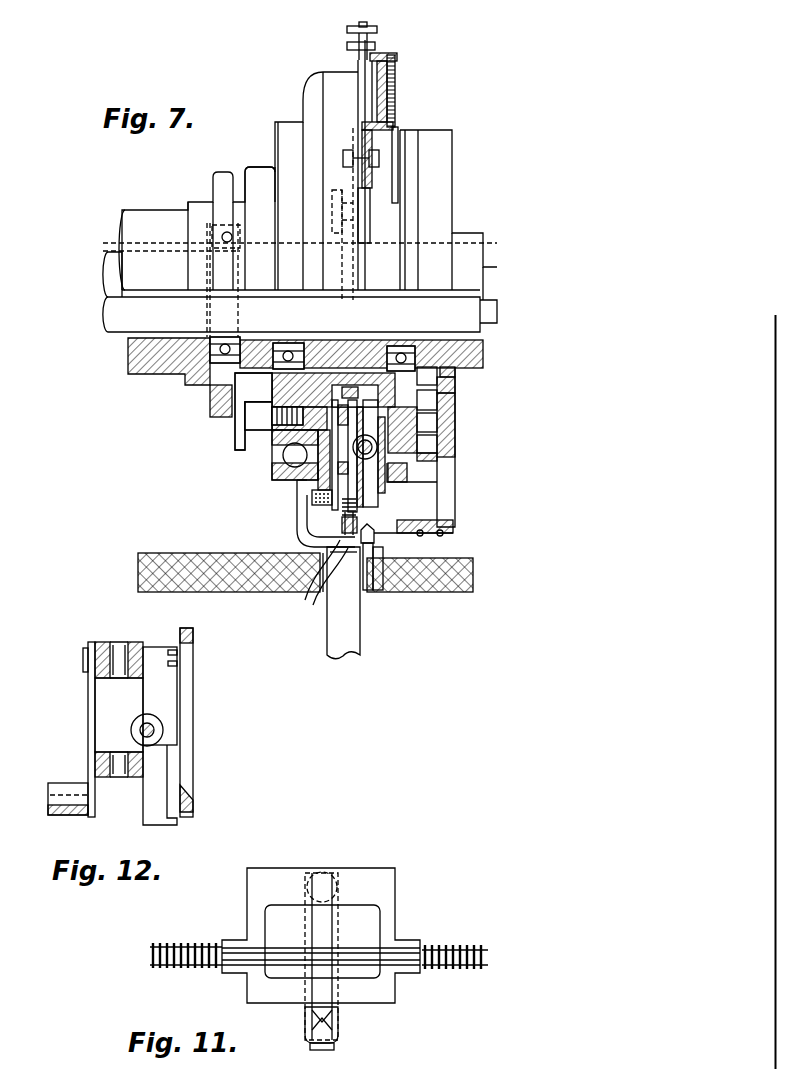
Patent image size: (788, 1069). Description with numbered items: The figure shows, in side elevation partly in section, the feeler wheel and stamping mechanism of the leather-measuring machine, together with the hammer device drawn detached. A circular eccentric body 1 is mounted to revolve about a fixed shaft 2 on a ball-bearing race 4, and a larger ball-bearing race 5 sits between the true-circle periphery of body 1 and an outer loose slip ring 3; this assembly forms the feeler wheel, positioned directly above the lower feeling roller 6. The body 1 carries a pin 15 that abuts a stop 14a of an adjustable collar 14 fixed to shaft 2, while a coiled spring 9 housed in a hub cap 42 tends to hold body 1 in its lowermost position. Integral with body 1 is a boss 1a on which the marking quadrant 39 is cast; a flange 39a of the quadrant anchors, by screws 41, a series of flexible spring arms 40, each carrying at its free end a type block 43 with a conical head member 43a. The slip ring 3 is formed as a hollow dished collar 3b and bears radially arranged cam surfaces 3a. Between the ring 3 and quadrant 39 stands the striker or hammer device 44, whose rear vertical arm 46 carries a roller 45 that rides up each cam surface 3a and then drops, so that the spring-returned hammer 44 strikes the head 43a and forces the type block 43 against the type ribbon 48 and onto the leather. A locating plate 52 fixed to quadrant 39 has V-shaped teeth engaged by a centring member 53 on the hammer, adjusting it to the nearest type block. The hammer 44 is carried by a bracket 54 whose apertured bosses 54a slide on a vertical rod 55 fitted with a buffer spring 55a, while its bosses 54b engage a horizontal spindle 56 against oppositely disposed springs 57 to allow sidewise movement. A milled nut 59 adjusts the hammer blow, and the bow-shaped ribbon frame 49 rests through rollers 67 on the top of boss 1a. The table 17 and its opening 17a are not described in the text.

In FIG. 7, the eccentric body 1 is at (250, 385).
In FIG. 7, the boss 1a is at (372, 373).
In FIG. 7, the shaft 2 is at (118, 297).
In FIG. 7, the slip ring 3 is at (300, 510).
In FIG. 7, the cam surfaces 3a is at (312, 522).
In FIG. 7, the dished flanged collar 3b is at (300, 560).
In FIG. 7, the ball-bearing race 4 is at (290, 347).
In FIG. 7, the ball-bearing race 5 is at (290, 458).
In FIG. 7, the lower feeling roller 6 is at (348, 652).
In FIG. 7, the coiled spring 9 is at (438, 420).
In FIG. 7, the adjustable collar 14 is at (262, 162).
In FIG. 7, the stop 14a is at (245, 393).
In FIG. 7, the pin 15 is at (255, 418).
In FIG. 7, the table plate 17 is at (178, 556).
In FIG. 7, the plate opening 17a is at (322, 595).
In FIG. 7, the marking wheel quadrant 39 is at (405, 470).
In FIG. 7, the flange 39a is at (453, 527).
In FIG. 7, the flexible arms 40 is at (407, 535).
In FIG. 7, the screws 41 is at (430, 522).
In FIG. 7, the hub cap 42 is at (440, 213).
In FIG. 7, the type block 43 is at (375, 560).
In FIG. 7, the conical head member 43a is at (373, 527).
In FIG. 7, the striker or hammer device 44 is at (368, 472).
In FIG. 12, the striker or hammer device 44 is at (155, 820).
In FIG. 11, the striker or hammer device 44 is at (335, 918).
In FIG. 7, the roller 45 is at (318, 497).
In FIG. 12, the roller 45 is at (60, 790).
In FIG. 11, the roller 45 is at (340, 1030).
In FIG. 7, the vertical arm 46 is at (333, 436).
In FIG. 12, the vertical arm 46 is at (90, 707).
In FIG. 11, the vertical arm 46 is at (380, 930).
In FIG. 7, the type ribbon 48 is at (392, 560).
In FIG. 7, the bow-shaped frame 49 is at (388, 97).
In FIG. 7, the locating plate 52 is at (452, 400).
In FIG. 12, the locating plate 52 is at (193, 652).
In FIG. 12, the centring member 53 is at (190, 809).
In FIG. 11, the centring member 53 is at (325, 878).
In FIG. 12, the bracket 54 is at (128, 700).
In FIG. 11, the bracket 54 is at (250, 880).
In FIG. 12, the apertured bosses 54a is at (103, 645).
In FIG. 12, the apertured bosses 54b is at (164, 724).
In FIG. 11, the apertured bosses 54b is at (230, 945).
In FIG. 7, the vertical rod 55 is at (335, 512).
In FIG. 7, the buffer spring 55a is at (320, 570).
In FIG. 12, the horizontal spindle 56 is at (152, 736).
In FIG. 11, the horizontal spindle 56 is at (152, 948).
In FIG. 11, the springs 57 is at (476, 950).
In FIG. 7, the milled nut 59 is at (378, 35).
In FIG. 7, the rollers 67 is at (360, 207).